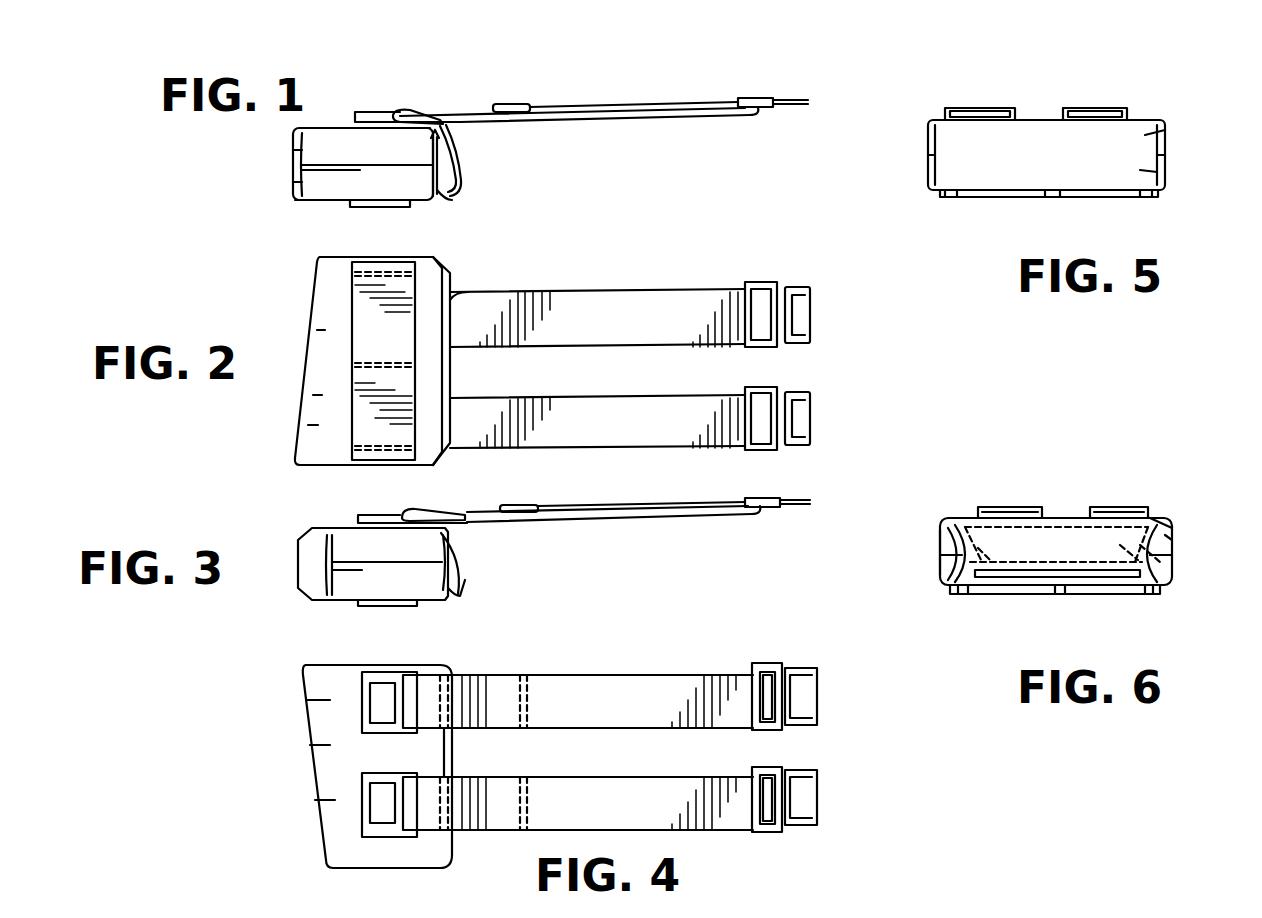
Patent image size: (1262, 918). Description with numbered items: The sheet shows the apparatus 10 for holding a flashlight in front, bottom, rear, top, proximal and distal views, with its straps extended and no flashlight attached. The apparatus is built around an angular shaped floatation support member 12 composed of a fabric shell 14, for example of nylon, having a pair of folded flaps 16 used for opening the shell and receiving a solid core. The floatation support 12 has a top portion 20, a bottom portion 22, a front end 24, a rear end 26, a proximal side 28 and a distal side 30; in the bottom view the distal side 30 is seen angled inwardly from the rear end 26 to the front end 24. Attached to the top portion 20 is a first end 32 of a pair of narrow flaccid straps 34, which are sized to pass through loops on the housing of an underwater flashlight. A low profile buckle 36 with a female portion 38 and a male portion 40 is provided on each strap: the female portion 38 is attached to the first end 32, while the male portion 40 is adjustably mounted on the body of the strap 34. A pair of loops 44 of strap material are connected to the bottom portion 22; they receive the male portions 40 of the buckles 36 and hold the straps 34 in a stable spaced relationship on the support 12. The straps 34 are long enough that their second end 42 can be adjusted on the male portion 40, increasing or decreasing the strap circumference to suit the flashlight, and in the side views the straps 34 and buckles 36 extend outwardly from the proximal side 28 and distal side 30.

In FIG. 1, the apparatus for holding a flashlight 10 is at (455, 72).
In FIG. 5, the apparatus for holding a flashlight 10 is at (1095, 82).
In FIG. 2, the apparatus for holding a flashlight 10 is at (575, 258).
In FIG. 3, the apparatus for holding a flashlight 10 is at (605, 500).
In FIG. 4, the apparatus for holding a flashlight 10 is at (596, 650).
In FIG. 6, the apparatus for holding a flashlight 10 is at (1098, 460).
In FIG. 1, the floatation support member 12 is at (300, 158).
In FIG. 5, the floatation support member 12 is at (1148, 136).
In FIG. 2, the floatation support member 12 is at (340, 396).
In FIG. 4, the floatation support member 12 is at (330, 745).
In FIG. 6, the floatation support member 12 is at (1160, 518).
In FIG. 1, the fabric shell 14 is at (300, 184).
In FIG. 5, the fabric shell 14 is at (1142, 170).
In FIG. 2, the fabric shell 14 is at (315, 425).
In FIG. 4, the fabric shell 14 is at (340, 710).
In FIG. 6, the fabric shell 14 is at (1172, 535).
In FIG. 1, the folded flaps 16 is at (455, 152).
In FIG. 3, the folded flaps 16 is at (460, 552).
In FIG. 6, the folded flaps 16 is at (948, 560).
In FIG. 1, the top portion 20 is at (332, 126).
In FIG. 5, the top portion 20 is at (1035, 118).
In FIG. 4, the top portion 20 is at (340, 798).
In FIG. 6, the top portion 20 is at (1072, 518).
In FIG. 1, the bottom portion 22 is at (316, 202).
In FIG. 2, the bottom portion 22 is at (330, 347).
In FIG. 5, the front end 24 is at (1167, 142).
In FIG. 2, the front end 24 is at (425, 257).
In FIG. 4, the front end 24 is at (400, 870).
In FIG. 6, the front end 24 is at (940, 548).
In FIG. 1, the rear end 26 is at (362, 172).
In FIG. 5, the rear end 26 is at (927, 150).
In FIG. 2, the rear end 26 is at (340, 468).
In FIG. 3, the rear end 26 is at (365, 572).
In FIG. 4, the rear end 26 is at (410, 665).
In FIG. 6, the rear end 26 is at (1173, 556).
In FIG. 1, the proximal side 28 is at (458, 188).
In FIG. 2, the proximal side 28 is at (462, 292).
In FIG. 3, the proximal side 28 is at (462, 580).
In FIG. 4, the proximal side 28 is at (455, 752).
In FIG. 6, the proximal side 28 is at (1170, 568).
In FIG. 1, the distal side 30 is at (297, 168).
In FIG. 5, the distal side 30 is at (990, 165).
In FIG. 2, the distal side 30 is at (310, 375).
In FIG. 3, the distal side 30 is at (318, 575).
In FIG. 4, the distal side 30 is at (318, 780).
In FIG. 6, the distal side 30 is at (1056, 551).
In FIG. 1, the first end 32 is at (412, 112).
In FIG. 3, the first end 32 is at (433, 512).
In FIG. 4, the first end 32 is at (440, 675).
In FIG. 1, the flaccid straps 34 is at (660, 107).
In FIG. 2, the flaccid straps 34 is at (690, 302).
In FIG. 3, the flaccid straps 34 is at (613, 492).
In FIG. 4, the flaccid straps 34 is at (665, 690).
In FIG. 1, the buckle 36 is at (762, 98).
In FIG. 2, the buckle 36 is at (785, 283).
In FIG. 3, the buckle 36 is at (764, 507).
In FIG. 4, the buckle 36 is at (775, 665).
In FIG. 1, the female portion 38 is at (372, 112).
In FIG. 5, the female portion 38 is at (980, 112).
In FIG. 3, the female portion 38 is at (388, 516).
In FIG. 4, the female portion 38 is at (370, 697).
In FIG. 1, the male portion 40 is at (802, 100).
In FIG. 2, the male portion 40 is at (805, 310).
In FIG. 3, the male portion 40 is at (805, 500).
In FIG. 4, the male portion 40 is at (805, 692).
In FIG. 6, the male portion 40 is at (1018, 507).
In FIG. 1, the second end 42 is at (524, 103).
In FIG. 3, the second end 42 is at (525, 504).
In FIG. 4, the second end 42 is at (528, 675).
In FIG. 1, the loops 44 is at (392, 206).
In FIG. 5, the loops 44 is at (1015, 197).
In FIG. 2, the loops 44 is at (352, 323).
In FIG. 3, the loops 44 is at (392, 606).
In FIG. 6, the loops 44 is at (1022, 595).